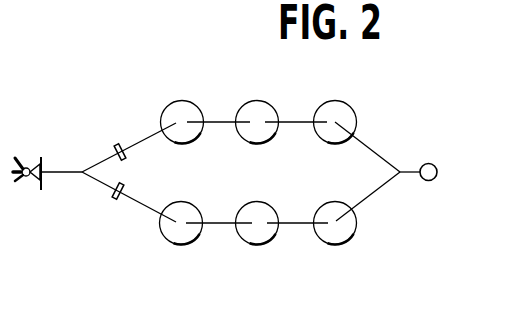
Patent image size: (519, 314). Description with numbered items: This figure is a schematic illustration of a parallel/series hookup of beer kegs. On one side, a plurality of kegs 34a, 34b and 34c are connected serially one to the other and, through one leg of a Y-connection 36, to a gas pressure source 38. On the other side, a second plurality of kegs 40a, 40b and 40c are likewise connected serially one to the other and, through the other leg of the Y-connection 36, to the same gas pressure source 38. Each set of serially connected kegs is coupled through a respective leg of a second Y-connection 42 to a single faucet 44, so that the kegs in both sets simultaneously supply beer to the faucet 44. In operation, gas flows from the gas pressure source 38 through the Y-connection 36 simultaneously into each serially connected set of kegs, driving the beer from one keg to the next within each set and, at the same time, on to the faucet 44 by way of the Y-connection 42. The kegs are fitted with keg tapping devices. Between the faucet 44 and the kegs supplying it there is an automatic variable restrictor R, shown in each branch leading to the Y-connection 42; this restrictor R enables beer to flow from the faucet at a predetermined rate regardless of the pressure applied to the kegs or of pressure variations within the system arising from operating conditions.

The keg 34a is at (197, 246).
The keg 34b is at (272, 245).
The keg 34c is at (345, 246).
The Y-connection 36 is at (400, 176).
The gas pressure source 38 is at (437, 178).
The keg 40a is at (199, 102).
The keg 40b is at (256, 102).
The keg 40c is at (324, 102).
The Y-connection 42 is at (82, 175).
The faucet 44 is at (28, 163).
The automatic variable restrictor R is at (121, 141).